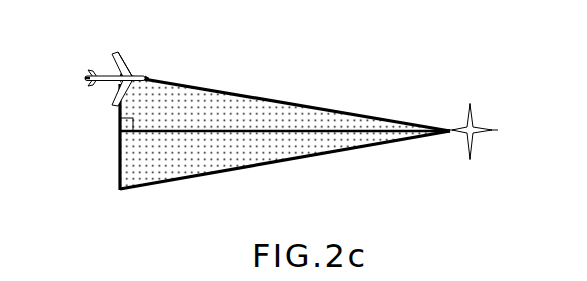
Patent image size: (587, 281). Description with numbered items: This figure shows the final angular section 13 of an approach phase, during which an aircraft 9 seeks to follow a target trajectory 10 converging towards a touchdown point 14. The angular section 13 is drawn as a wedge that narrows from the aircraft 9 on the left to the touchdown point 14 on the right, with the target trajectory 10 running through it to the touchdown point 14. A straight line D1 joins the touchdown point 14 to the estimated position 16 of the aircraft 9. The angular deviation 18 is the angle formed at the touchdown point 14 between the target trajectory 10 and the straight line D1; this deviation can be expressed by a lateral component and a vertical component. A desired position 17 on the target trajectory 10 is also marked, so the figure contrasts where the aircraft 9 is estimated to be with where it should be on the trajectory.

The aircraft 9 is at (110, 50).
The estimated position 16 is at (138, 63).
The straight line D1 is at (232, 93).
The angular section 13 is at (268, 120).
The angular deviation 18 is at (343, 130).
The touchdown point 14 is at (478, 120).
The desired position 17 is at (120, 132).
The target trajectory 10 is at (207, 133).